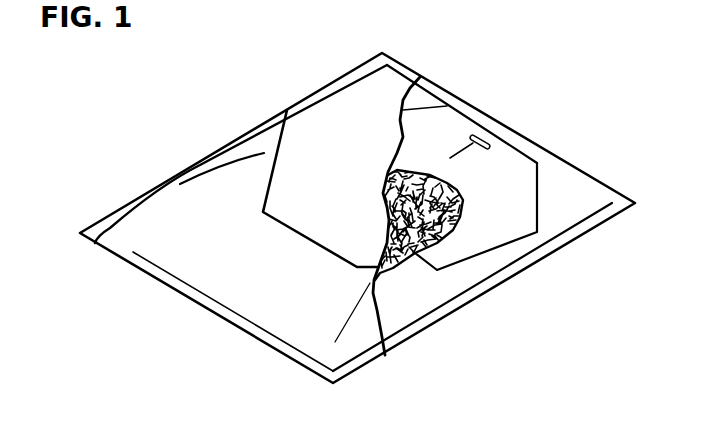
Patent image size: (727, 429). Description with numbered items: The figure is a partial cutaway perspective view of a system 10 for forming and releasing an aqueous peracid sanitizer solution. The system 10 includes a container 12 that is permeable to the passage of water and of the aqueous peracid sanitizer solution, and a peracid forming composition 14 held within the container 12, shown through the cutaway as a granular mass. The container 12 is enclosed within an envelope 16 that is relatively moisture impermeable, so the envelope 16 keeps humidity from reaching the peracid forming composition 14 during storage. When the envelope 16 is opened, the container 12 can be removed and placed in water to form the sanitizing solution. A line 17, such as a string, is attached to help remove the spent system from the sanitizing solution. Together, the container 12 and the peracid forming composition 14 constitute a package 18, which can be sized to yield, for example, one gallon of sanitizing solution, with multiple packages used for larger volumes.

The system 10 is at (531, 91).
The container 12 is at (508, 177).
The peracid forming composition 14 is at (437, 270).
The envelope 16 is at (322, 88).
The line 17 is at (497, 132).
The package 18 is at (169, 130).